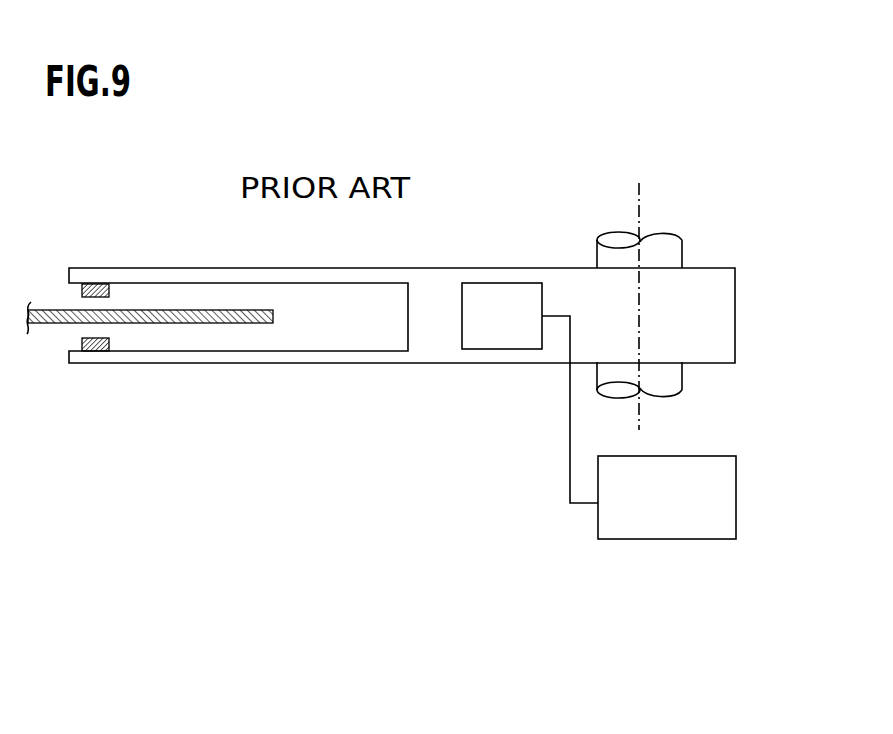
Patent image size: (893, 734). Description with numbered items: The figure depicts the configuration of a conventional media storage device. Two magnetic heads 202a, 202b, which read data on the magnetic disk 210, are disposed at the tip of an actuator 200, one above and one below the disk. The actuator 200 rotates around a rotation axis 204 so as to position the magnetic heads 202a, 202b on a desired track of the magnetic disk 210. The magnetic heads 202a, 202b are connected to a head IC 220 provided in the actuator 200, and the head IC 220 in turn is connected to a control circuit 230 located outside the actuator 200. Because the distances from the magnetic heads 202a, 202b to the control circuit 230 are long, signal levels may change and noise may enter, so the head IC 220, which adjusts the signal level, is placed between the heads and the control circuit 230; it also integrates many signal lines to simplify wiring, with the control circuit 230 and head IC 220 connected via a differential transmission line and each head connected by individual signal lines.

The actuator 200 is at (380, 277).
The magnetic head 202a is at (82, 291).
The magnetic head 202b is at (82, 341).
The rotation axis 204 is at (657, 242).
The magnetic disk 210 is at (47, 324).
The head IC 220 is at (483, 333).
The control circuit 230 is at (667, 525).